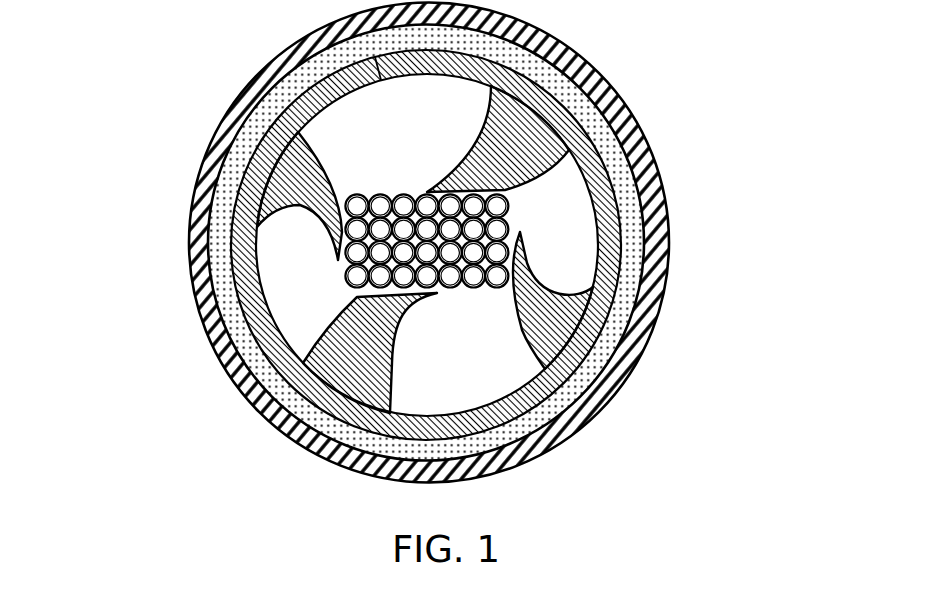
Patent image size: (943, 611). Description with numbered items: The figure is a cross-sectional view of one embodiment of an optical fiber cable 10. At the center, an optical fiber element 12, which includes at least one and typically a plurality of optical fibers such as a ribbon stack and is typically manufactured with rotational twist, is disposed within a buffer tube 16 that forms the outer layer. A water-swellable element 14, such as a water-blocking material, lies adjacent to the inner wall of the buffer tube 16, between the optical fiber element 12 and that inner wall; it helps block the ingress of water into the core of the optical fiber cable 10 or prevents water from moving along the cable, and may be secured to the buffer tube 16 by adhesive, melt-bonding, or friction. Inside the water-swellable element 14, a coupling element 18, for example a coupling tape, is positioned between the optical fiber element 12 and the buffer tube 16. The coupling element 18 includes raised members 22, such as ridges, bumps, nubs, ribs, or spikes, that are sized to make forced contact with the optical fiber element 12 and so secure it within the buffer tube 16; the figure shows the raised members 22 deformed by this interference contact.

The optical fiber cable 10 is at (176, 374).
The optical fiber element 12 is at (403, 192).
The water-swellable element 14 is at (630, 177).
The buffer tube 16 is at (632, 118).
The coupling element 18 is at (612, 232).
The raised members 22 is at (540, 310).